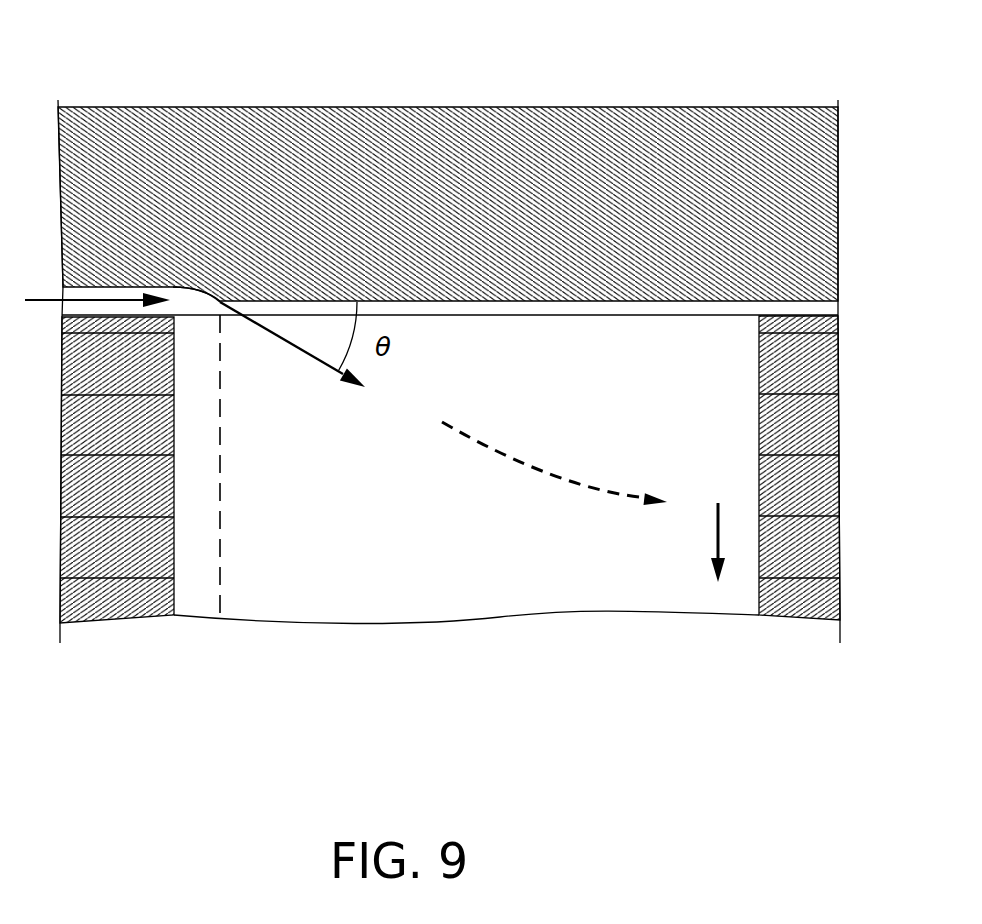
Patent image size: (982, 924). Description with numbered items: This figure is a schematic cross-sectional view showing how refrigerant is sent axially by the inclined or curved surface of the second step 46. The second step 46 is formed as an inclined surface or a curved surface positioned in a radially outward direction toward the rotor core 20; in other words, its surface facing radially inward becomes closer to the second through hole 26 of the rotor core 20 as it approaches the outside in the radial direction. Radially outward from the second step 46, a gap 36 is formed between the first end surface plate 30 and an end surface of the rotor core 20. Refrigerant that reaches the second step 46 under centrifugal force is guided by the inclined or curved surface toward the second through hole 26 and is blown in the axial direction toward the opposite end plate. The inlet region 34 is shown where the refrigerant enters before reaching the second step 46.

The rotor core 20 is at (147, 562).
The second through hole 26 is at (758, 598).
The first end surface plate 30 is at (585, 163).
The inlet opening 34 is at (120, 290).
The gap 36 is at (687, 315).
The second step 46 is at (218, 297).